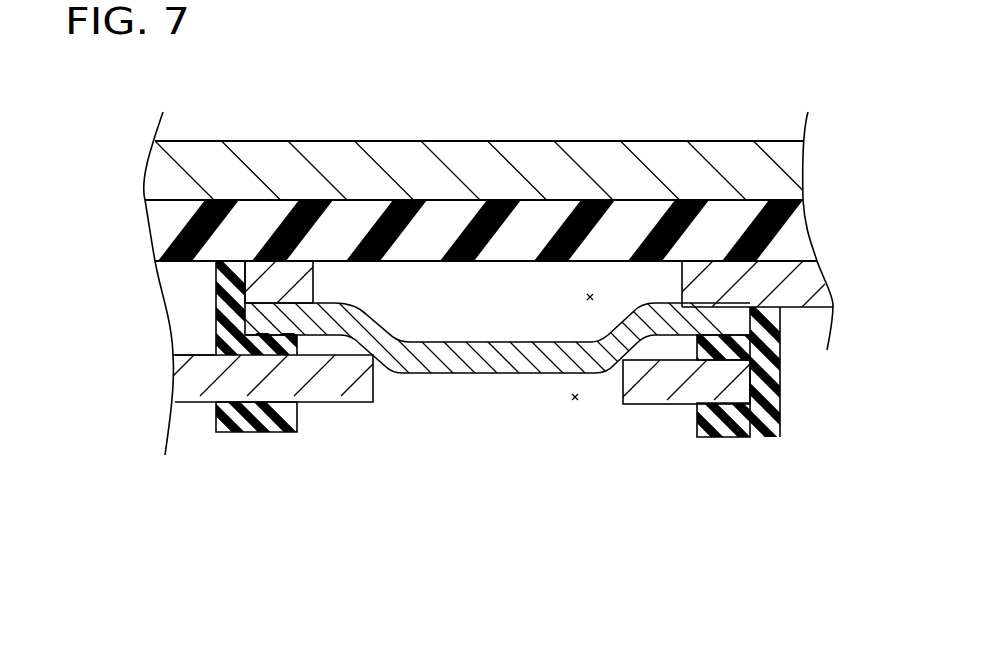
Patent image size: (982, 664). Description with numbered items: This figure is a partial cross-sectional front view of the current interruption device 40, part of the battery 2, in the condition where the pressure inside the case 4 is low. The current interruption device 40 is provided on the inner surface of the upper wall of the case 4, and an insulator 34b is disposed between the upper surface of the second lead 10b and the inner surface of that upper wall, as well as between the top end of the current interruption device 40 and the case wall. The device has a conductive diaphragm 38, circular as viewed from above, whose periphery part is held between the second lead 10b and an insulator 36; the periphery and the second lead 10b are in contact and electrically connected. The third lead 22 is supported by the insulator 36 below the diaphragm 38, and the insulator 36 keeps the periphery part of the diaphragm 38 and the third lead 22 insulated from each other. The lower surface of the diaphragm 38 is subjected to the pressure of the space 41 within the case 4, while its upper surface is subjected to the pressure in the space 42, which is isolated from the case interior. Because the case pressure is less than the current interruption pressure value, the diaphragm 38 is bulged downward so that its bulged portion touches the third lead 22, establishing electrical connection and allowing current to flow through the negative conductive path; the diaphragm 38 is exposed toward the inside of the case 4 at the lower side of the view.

The solar cell module 2 is at (836, 70).
The case 4 is at (537, 163).
The insulator 34b is at (462, 232).
The second lead 10b is at (277, 282).
The space 42 is at (590, 297).
The diaphragm 38 is at (525, 368).
The third lead 22 is at (323, 390).
The insulator 36 is at (272, 425).
The space 41 is at (576, 400).
The current interruption device 40 is at (461, 450).